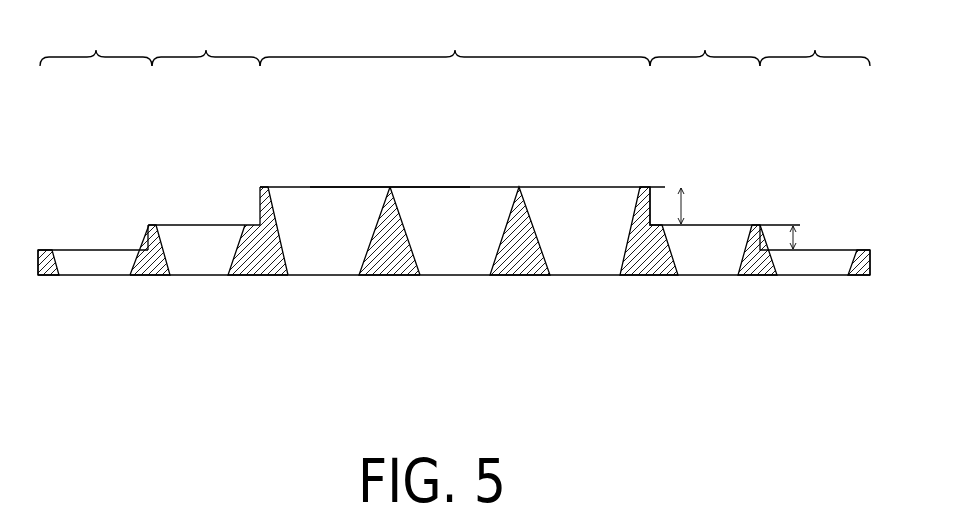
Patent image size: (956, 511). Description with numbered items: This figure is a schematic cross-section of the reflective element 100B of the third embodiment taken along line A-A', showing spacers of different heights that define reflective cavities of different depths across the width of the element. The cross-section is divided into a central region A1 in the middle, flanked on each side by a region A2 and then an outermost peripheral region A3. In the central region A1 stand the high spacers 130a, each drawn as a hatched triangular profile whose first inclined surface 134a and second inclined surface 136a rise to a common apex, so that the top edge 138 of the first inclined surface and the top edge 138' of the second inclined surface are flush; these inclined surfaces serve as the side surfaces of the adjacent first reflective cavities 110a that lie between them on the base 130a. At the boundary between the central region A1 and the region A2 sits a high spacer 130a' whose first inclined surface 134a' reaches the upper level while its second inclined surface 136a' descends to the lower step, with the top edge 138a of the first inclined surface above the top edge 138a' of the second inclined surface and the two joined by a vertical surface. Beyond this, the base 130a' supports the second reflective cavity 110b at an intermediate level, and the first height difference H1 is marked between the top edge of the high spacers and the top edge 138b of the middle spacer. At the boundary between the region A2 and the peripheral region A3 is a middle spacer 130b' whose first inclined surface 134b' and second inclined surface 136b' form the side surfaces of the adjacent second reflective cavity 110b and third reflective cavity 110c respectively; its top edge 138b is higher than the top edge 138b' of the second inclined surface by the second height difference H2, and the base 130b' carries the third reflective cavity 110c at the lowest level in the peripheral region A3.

The reflective element 100B is at (58, 25).
The first reflective cavity 110a is at (578, 205).
The second reflective cavity 110b is at (735, 237).
The third reflective cavity 110c is at (840, 258).
The high spacer 130a is at (590, 310).
The high spacer 130a' is at (255, 344).
The middle spacer 130b' is at (119, 347).
The first inclined surface 134a is at (425, 302).
The first inclined surface 134a' is at (297, 281).
The first inclined surface 134b' is at (173, 301).
The second inclined surface 136a is at (370, 302).
The second inclined surface 136a' is at (236, 282).
The second inclined surface 136b' is at (109, 291).
The top edge of first inclined surface 138 is at (430, 148).
The top edge of second inclined surface 138' is at (350, 148).
The top edge of first inclined surface of high spacer 138a is at (259, 156).
The top edge of second inclined surface of high spacer 138a' is at (204, 185).
The top edge of first inclined surface of middle spacer 138b is at (154, 187).
The top edge of second inclined surface of middle spacer 138b' is at (93, 216).
The first height difference H1 is at (698, 206).
The second height difference H2 is at (812, 238).
The central region A1 is at (455, 44).
The second area A2 is at (456, 44).
The peripheral region A3 is at (455, 44).